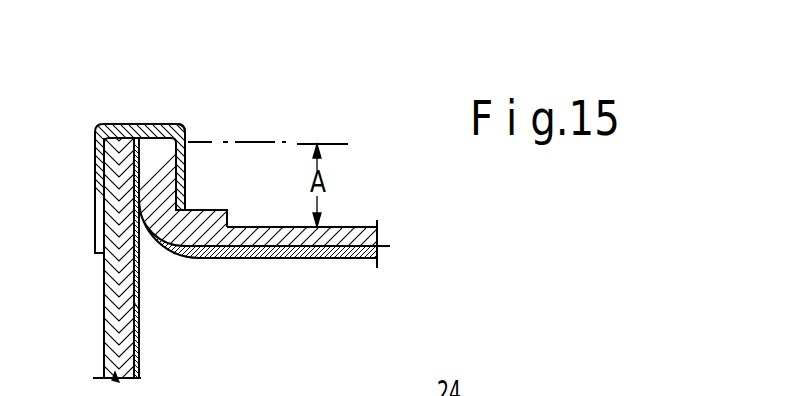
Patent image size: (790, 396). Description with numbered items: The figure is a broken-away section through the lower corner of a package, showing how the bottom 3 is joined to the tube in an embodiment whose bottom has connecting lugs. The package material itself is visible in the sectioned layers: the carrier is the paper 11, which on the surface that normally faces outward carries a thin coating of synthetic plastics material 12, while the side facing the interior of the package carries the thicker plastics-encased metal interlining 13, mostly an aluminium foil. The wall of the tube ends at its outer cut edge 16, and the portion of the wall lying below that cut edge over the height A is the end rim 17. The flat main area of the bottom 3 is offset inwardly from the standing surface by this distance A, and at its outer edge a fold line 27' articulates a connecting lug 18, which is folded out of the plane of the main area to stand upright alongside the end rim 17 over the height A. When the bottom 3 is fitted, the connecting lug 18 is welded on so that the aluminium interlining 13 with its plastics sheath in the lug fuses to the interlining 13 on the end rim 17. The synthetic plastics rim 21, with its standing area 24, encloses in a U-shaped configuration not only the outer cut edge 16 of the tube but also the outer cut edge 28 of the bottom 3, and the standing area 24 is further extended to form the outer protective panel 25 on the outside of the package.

The bottom 3 is at (377, 224).
The paper 11 is at (110, 303).
The synthetic plastics material 12 is at (340, 232).
The plastics-encased metal interlining 13 is at (136, 343).
The outer cut edge of the tube 16 is at (110, 122).
The end rim 17 is at (100, 157).
The connecting lugs 18 is at (150, 180).
The plastics rim 21 is at (162, 124).
The standing area 24 is at (136, 125).
The outer protective panel 25 is at (102, 203).
The outer cut edge of the bottom 28 is at (181, 126).
The fold lines 27' is at (255, 285).